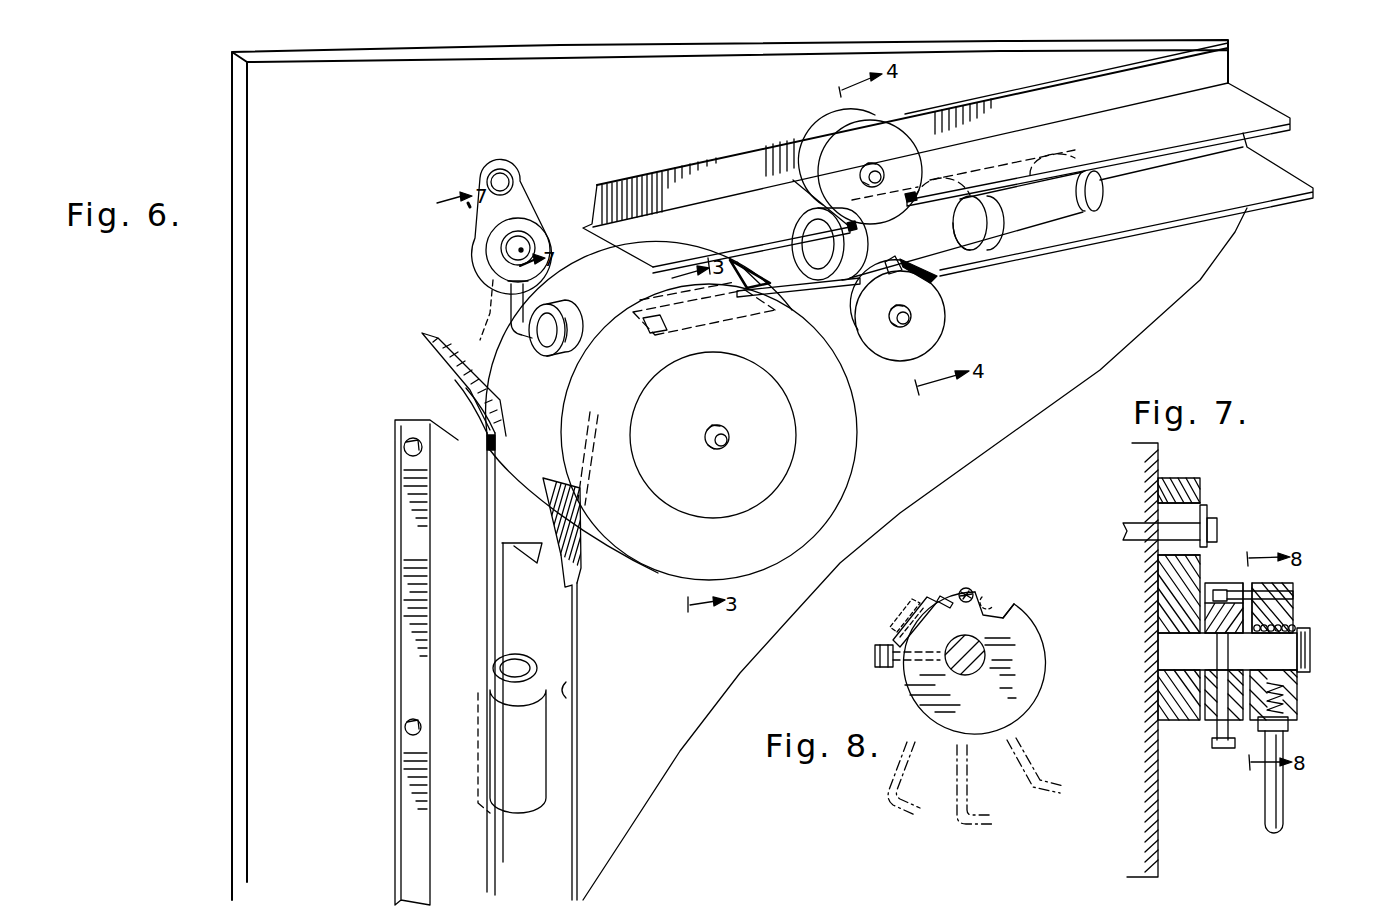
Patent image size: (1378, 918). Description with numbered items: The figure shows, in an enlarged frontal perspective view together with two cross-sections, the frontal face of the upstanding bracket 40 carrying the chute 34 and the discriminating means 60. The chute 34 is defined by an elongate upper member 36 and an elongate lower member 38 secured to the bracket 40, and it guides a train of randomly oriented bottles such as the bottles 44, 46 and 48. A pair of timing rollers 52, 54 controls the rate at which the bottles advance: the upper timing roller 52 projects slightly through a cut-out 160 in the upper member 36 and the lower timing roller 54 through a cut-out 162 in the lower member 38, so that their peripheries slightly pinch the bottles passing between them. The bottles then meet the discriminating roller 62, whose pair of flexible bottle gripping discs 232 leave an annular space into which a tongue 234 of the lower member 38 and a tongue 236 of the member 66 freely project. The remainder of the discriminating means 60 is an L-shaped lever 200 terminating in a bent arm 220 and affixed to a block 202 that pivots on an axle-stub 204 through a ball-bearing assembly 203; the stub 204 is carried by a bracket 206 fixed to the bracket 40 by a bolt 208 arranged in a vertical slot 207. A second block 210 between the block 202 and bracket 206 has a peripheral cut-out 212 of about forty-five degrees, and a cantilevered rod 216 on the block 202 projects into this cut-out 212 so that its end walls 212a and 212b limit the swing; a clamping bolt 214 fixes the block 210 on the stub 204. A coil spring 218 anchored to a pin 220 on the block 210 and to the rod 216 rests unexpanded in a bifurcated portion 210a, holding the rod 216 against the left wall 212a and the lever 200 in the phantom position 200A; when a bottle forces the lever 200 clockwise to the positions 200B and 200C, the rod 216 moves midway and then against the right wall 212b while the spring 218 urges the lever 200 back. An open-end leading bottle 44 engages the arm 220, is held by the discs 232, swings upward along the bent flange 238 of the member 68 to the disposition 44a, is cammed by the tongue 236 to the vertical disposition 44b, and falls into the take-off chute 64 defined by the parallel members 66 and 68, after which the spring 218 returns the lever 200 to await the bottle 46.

In FIG. 6, the chute 34 is at (1150, 221).
In FIG. 6, the elongate upper member 36 is at (1174, 133).
In FIG. 6, the elongate lower member 38 is at (1207, 200).
In FIG. 6, the bracket 40 is at (333, 318).
In FIG. 7, the bracket 40 is at (1150, 590).
In FIG. 6, the bottle 44 is at (608, 262).
In FIG. 6, the bottle position 44a is at (445, 370).
In FIG. 6, the bottle position 44b is at (533, 742).
In FIG. 6, the bottle 46 is at (818, 255).
In FIG. 6, the bottle 48 is at (1050, 215).
In FIG. 6, the timing roller 52 is at (875, 137).
In FIG. 6, the timing roller 54 is at (940, 325).
In FIG. 6, the discriminating means 60 is at (468, 262).
In FIG. 7, the discriminating means 60 is at (1296, 538).
In FIG. 6, the discriminating roller 62 is at (838, 452).
In FIG. 6, the chute 64 is at (570, 690).
In FIG. 6, the member 66 is at (553, 627).
In FIG. 6, the member 68 is at (445, 534).
In FIG. 6, the cut-out 160 is at (995, 167).
In FIG. 6, the cut-out 162 is at (945, 283).
In FIG. 6, the lever 200 is at (507, 273).
In FIG. 7, the lever 200 is at (1269, 806).
In FIG. 8, the at-rest lever position 200A is at (1068, 760).
In FIG. 8, the lever position 200B is at (966, 806).
In FIG. 8, the lever position 200C is at (888, 800).
In FIG. 6, the block 202 is at (531, 214).
In FIG. 7, the block 202 is at (1293, 620).
In FIG. 7, the ball-bearing assembly 203 is at (1297, 698).
In FIG. 6, the axle-stub 204 is at (532, 244).
In FIG. 7, the axle-stub 204 is at (1284, 650).
In FIG. 6, the bracket 206 is at (484, 178).
In FIG. 7, the bracket 206 is at (1200, 480).
In FIG. 7, the vertical slot 207 is at (1208, 506).
In FIG. 6, the bolt 208 is at (507, 170).
In FIG. 7, the bolt 208 is at (1193, 528).
In FIG. 7, the second block 210 is at (1204, 720).
In FIG. 8, the second block 210 is at (1020, 640).
In FIG. 7, the bifurcated portion 210a is at (1227, 651).
In FIG. 8, the bifurcated portion 210a is at (900, 620).
In FIG. 8, the cut-out 212 is at (1000, 600).
In FIG. 8, the left end wall 212a is at (928, 597).
In FIG. 8, the right end wall 212b is at (1020, 607).
In FIG. 7, the clamping bolt 214 is at (1214, 750).
In FIG. 7, the cantilevered rod 216 is at (1219, 590).
In FIG. 8, the cantilevered rod 216 is at (972, 592).
In FIG. 8, the coil spring 218 is at (948, 596).
In FIG. 6, the bent arm 220 is at (535, 352).
In FIG. 8, the bent arm 220 is at (877, 660).
In FIG. 6, the bottle gripping discs 232 is at (573, 243).
In FIG. 6, the tongue 234 is at (715, 322).
In FIG. 6, the tongue 236 is at (595, 497).
In FIG. 6, the bent flange 238 is at (432, 340).